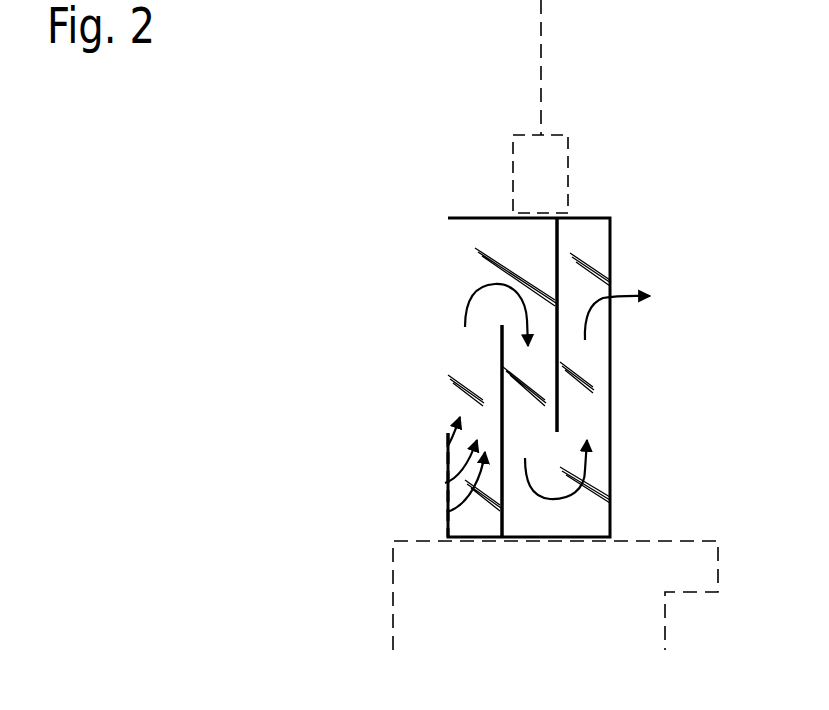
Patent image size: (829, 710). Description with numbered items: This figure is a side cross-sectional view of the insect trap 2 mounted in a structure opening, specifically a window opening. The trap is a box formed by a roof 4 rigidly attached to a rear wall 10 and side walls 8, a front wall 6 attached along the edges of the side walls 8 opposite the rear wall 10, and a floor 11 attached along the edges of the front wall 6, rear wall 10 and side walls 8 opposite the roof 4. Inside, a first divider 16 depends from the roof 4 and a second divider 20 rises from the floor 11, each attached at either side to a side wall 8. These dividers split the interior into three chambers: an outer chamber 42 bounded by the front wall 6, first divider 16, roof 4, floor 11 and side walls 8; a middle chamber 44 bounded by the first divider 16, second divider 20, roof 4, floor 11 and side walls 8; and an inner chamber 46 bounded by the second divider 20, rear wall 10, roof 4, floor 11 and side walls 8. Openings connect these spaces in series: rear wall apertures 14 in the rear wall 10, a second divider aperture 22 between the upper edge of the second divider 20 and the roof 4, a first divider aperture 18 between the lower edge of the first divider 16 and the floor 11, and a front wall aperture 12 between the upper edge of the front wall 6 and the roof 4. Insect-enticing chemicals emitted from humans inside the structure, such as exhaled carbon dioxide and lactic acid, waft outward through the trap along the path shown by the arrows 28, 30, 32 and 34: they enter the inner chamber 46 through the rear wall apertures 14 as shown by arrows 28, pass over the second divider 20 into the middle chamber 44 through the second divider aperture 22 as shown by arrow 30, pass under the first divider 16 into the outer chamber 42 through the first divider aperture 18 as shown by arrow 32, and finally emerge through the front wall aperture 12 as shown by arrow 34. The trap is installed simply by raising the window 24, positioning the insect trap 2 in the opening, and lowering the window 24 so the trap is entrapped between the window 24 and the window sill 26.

The insect trap 2 is at (150, 146).
The roof 4 is at (468, 217).
The front wall 6 is at (610, 438).
The side walls 8 is at (509, 236).
The rear wall 10 is at (447, 318).
The floor 11 is at (468, 540).
The front wall aperture 12 is at (611, 253).
The rear wall apertures 14 is at (447, 452).
The first divider 16 is at (557, 350).
The first divider aperture 18 is at (560, 518).
The second divider 20 is at (500, 422).
The second divider aperture 22 is at (503, 281).
The window 24 is at (553, 170).
The window sill 26 is at (652, 541).
The arrows 28 is at (447, 447).
The arrow 30 is at (470, 293).
The arrow 32 is at (548, 502).
The arrow 34 is at (630, 296).
The outer chamber 42 is at (585, 395).
The middle chamber 44 is at (522, 403).
The inner chamber 46 is at (473, 352).